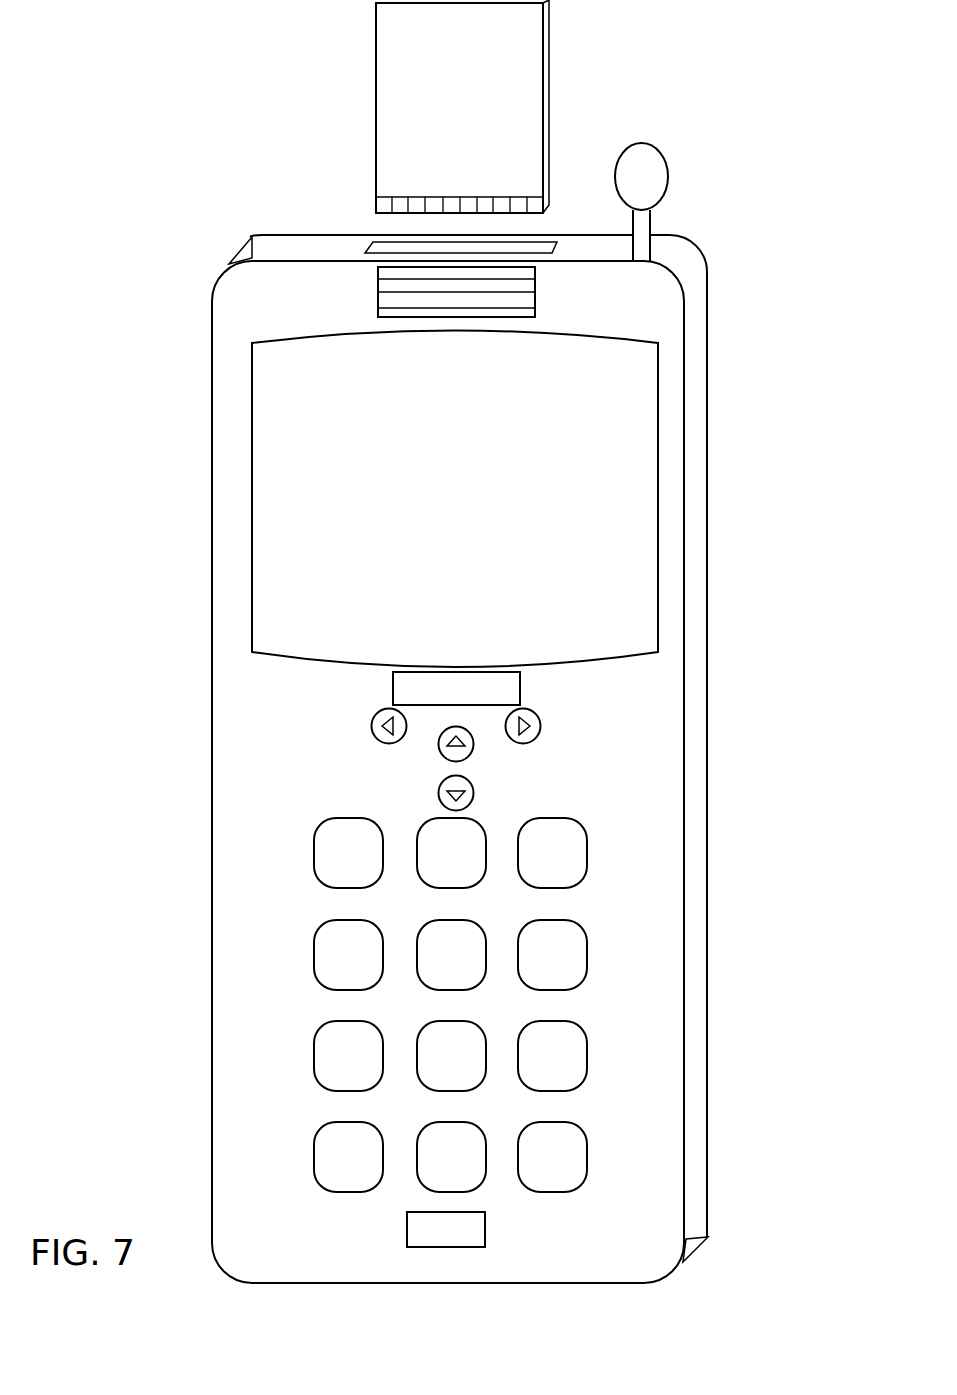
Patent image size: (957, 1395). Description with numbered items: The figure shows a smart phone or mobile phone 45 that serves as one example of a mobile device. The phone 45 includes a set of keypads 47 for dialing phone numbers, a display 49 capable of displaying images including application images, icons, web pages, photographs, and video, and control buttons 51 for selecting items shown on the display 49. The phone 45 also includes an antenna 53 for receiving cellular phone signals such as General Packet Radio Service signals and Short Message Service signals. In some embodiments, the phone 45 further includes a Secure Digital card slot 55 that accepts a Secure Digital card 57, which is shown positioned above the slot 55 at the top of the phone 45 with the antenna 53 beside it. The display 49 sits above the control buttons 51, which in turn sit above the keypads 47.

The mobile communication device 45 is at (212, 298).
The keypad 47 is at (607, 860).
The display 49 is at (658, 495).
The navigation keys 51 is at (407, 752).
The antenna 53 is at (668, 185).
The card slot 55 is at (402, 250).
The memory card 57 is at (553, 69).